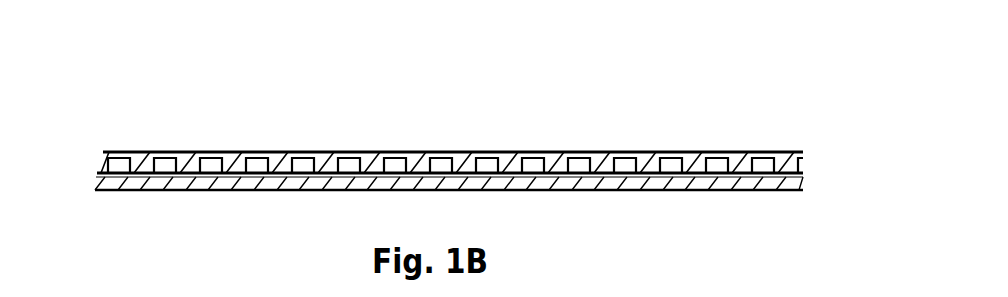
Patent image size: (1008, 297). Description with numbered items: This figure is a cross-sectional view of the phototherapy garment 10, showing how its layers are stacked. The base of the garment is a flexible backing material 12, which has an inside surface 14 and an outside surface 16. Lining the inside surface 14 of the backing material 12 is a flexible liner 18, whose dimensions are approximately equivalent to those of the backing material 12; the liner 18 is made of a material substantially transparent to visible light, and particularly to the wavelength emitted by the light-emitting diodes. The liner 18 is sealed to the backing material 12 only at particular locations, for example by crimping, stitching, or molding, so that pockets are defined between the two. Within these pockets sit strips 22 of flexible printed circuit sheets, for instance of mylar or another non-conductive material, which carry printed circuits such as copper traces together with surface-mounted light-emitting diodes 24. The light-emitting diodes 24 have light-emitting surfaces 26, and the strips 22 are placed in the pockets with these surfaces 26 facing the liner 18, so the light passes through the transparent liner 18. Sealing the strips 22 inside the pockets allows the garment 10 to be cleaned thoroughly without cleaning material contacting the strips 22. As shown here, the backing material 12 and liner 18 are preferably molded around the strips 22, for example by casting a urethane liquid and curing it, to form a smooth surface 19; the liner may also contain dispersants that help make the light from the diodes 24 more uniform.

The phototherapy garment 10 is at (642, 104).
The flexible backing material 12 is at (814, 183).
The inside surface 14 is at (94, 171).
The outside surface 16 is at (130, 192).
The flexible liner 18 is at (826, 157).
The smooth surface 19 is at (368, 152).
The strips 22 is at (578, 183).
The light-emitting diodes 24 is at (258, 163).
The light-emitting surfaces 26 is at (153, 151).